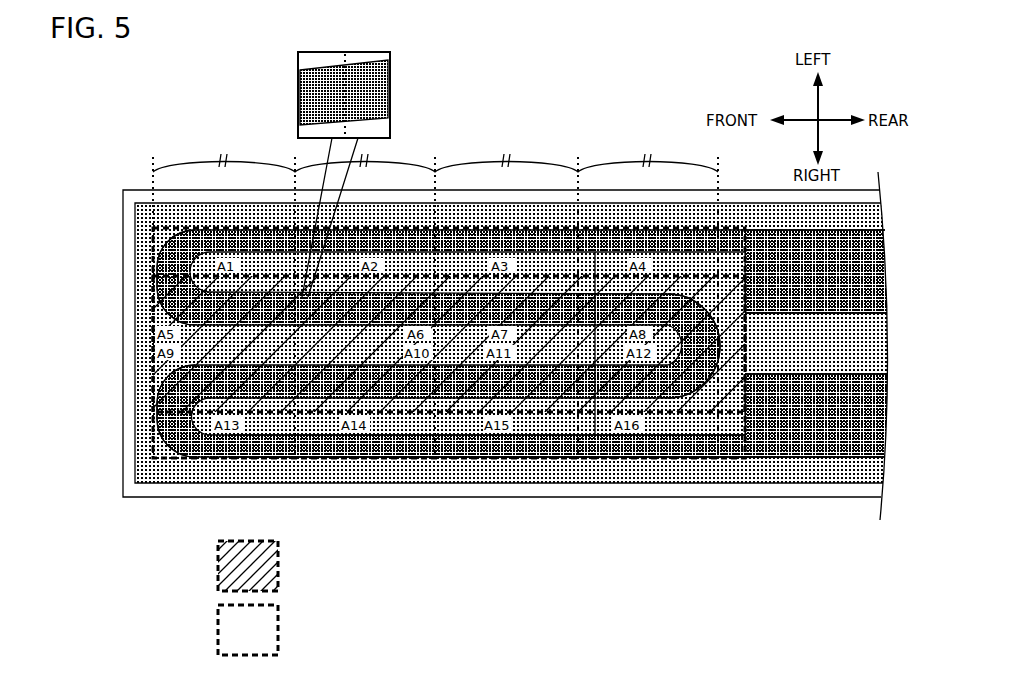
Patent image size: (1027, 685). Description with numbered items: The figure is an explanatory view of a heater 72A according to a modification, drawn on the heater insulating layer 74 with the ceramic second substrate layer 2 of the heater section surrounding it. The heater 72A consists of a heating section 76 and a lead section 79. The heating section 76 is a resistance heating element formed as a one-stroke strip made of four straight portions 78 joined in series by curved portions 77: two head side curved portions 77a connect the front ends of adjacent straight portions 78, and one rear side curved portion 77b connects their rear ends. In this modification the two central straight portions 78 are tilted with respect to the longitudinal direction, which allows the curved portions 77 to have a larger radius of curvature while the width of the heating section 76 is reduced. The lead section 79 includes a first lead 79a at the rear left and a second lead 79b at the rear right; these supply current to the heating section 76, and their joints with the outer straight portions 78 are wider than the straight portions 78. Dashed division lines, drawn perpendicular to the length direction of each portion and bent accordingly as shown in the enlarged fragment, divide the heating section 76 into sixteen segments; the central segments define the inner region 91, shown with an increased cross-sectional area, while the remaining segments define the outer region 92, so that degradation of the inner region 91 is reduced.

The second substrate layer 2 is at (150, 493).
The heater insulating layer 74 is at (174, 474).
The heater 72A is at (790, 636).
The heating section 76 is at (688, 596).
The curved portion 77 is at (674, 532).
The head side curved portion 77a is at (178, 250).
The rear side curved portion 77b is at (647, 445).
The straight portion 78 is at (597, 437).
The lead section 79 is at (813, 596).
The first lead 79a is at (747, 313).
The second lead 79b is at (813, 375).
The inner region 91 is at (110, 278).
The outer region 92 is at (110, 228).